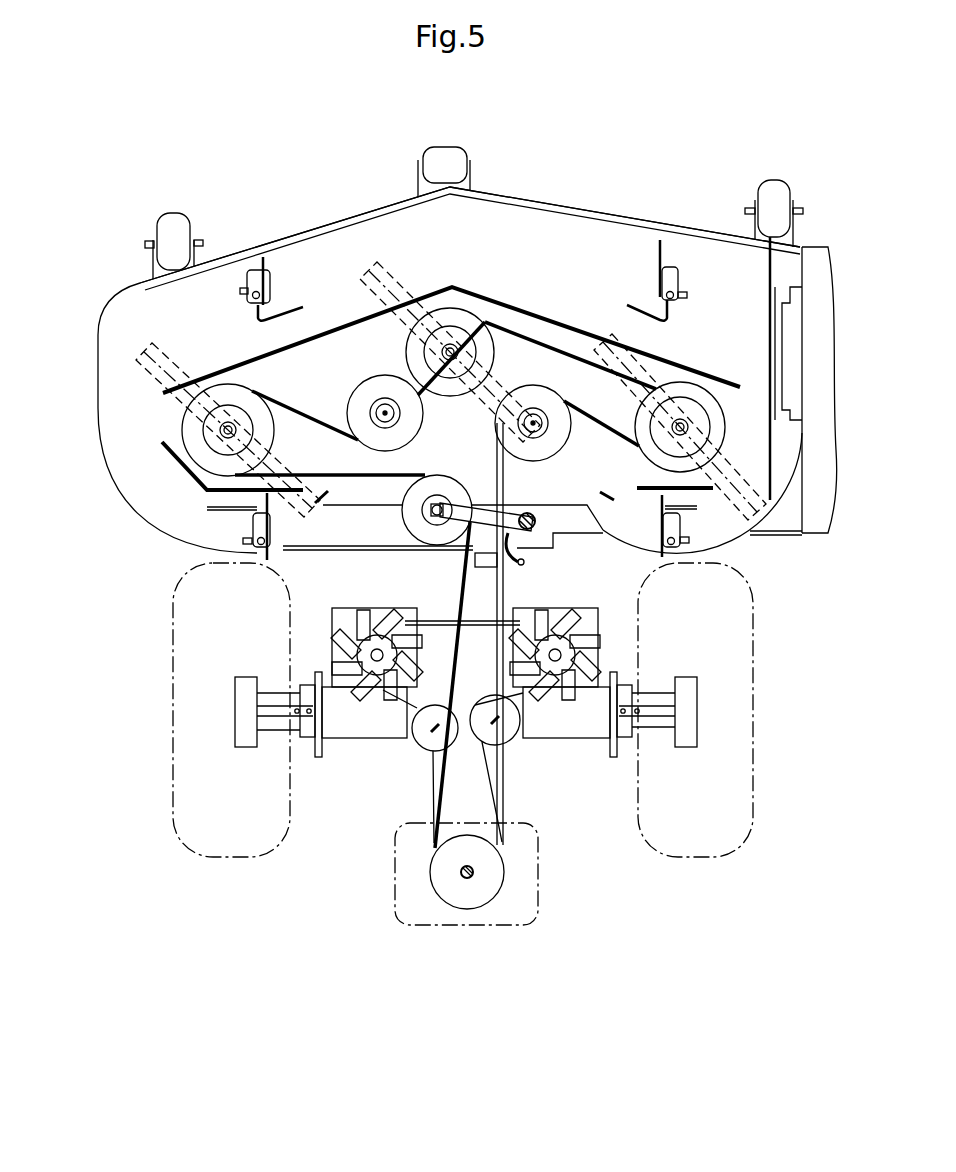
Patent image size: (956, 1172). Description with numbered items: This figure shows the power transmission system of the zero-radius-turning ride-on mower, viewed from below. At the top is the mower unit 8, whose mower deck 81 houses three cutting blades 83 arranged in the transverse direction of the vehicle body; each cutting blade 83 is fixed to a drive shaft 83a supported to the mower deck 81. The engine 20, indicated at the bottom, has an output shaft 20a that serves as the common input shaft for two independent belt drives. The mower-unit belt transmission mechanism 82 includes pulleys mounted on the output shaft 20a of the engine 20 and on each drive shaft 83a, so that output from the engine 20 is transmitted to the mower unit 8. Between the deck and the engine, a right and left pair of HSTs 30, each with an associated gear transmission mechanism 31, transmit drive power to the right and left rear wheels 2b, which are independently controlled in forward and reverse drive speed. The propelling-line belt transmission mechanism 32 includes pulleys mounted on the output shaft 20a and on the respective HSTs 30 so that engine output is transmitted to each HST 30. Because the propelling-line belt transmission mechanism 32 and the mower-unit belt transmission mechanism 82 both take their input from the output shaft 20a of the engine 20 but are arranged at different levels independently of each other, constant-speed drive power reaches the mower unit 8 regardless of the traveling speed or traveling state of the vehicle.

The mower unit 8 is at (308, 226).
The mower deck 81 is at (598, 232).
The mower-unit belt transmission mechanism 82 is at (312, 415).
The cutting blade 83 is at (390, 277).
The drive shaft 83a is at (455, 348).
The HST (hydrostatic transmission) 30 is at (363, 612).
The gear transmission mechanism 31 is at (362, 735).
The propelling-line belt transmission mechanism 32 is at (442, 614).
The rear wheel 2b is at (173, 722).
The engine 20 is at (483, 925).
The output shaft 20a is at (462, 874).